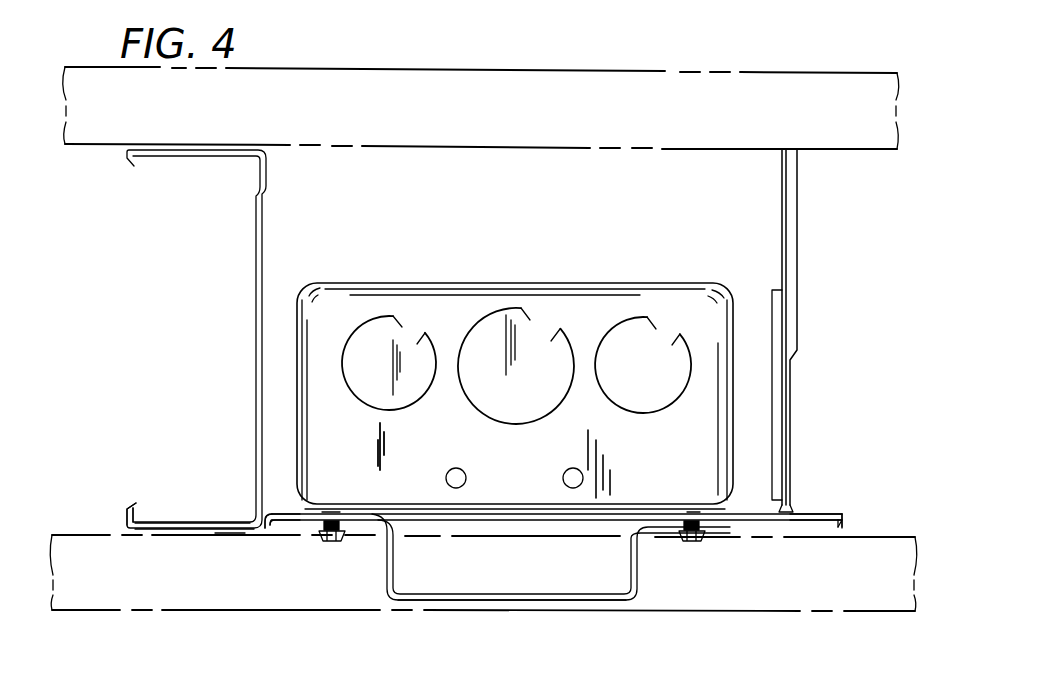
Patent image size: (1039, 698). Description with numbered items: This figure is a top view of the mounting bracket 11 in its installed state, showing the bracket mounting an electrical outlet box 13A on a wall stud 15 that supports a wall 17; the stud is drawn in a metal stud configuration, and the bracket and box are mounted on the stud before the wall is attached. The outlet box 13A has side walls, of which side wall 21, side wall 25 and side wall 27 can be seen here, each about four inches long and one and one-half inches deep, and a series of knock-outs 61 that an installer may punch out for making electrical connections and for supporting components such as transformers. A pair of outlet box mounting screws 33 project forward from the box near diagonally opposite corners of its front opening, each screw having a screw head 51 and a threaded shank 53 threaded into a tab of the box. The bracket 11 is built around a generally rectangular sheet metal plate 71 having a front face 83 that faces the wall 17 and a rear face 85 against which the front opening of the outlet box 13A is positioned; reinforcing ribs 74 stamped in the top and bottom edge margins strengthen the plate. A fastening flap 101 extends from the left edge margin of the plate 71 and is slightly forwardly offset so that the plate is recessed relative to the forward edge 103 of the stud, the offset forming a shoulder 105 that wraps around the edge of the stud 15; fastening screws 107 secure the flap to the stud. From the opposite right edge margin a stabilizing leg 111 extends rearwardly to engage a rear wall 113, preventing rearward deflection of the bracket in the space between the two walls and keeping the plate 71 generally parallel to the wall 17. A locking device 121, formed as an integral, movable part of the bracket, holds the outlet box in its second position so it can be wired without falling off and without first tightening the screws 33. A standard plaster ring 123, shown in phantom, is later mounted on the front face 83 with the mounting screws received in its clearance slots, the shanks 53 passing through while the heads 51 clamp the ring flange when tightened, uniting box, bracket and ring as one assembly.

The mounting bracket 11 is at (770, 628).
The electrical outlet box 13A is at (630, 283).
The wall stud 15 is at (253, 300).
The wall 17 is at (130, 612).
The side wall 21 is at (297, 387).
The side wall 25 is at (733, 415).
The side wall 27 is at (410, 453).
The outlet box mounting screw 33 is at (320, 528).
The screw head 51 is at (350, 532).
The threaded shank 53 is at (322, 512).
The knock-out 61 is at (383, 320).
The sheet metal plate 71 is at (480, 530).
The reinforcing rib 74 is at (736, 506).
The front face 83 is at (816, 522).
The rear face 85 is at (805, 513).
The fastening flap 101 is at (201, 539).
The forward edge 103 is at (140, 536).
The shoulder 105 is at (262, 517).
The fastening screw 107 is at (228, 546).
The stabilizing leg 111 is at (798, 263).
The wall 113 is at (655, 67).
The locking device 121 is at (347, 543).
The plaster ring 123 is at (583, 603).